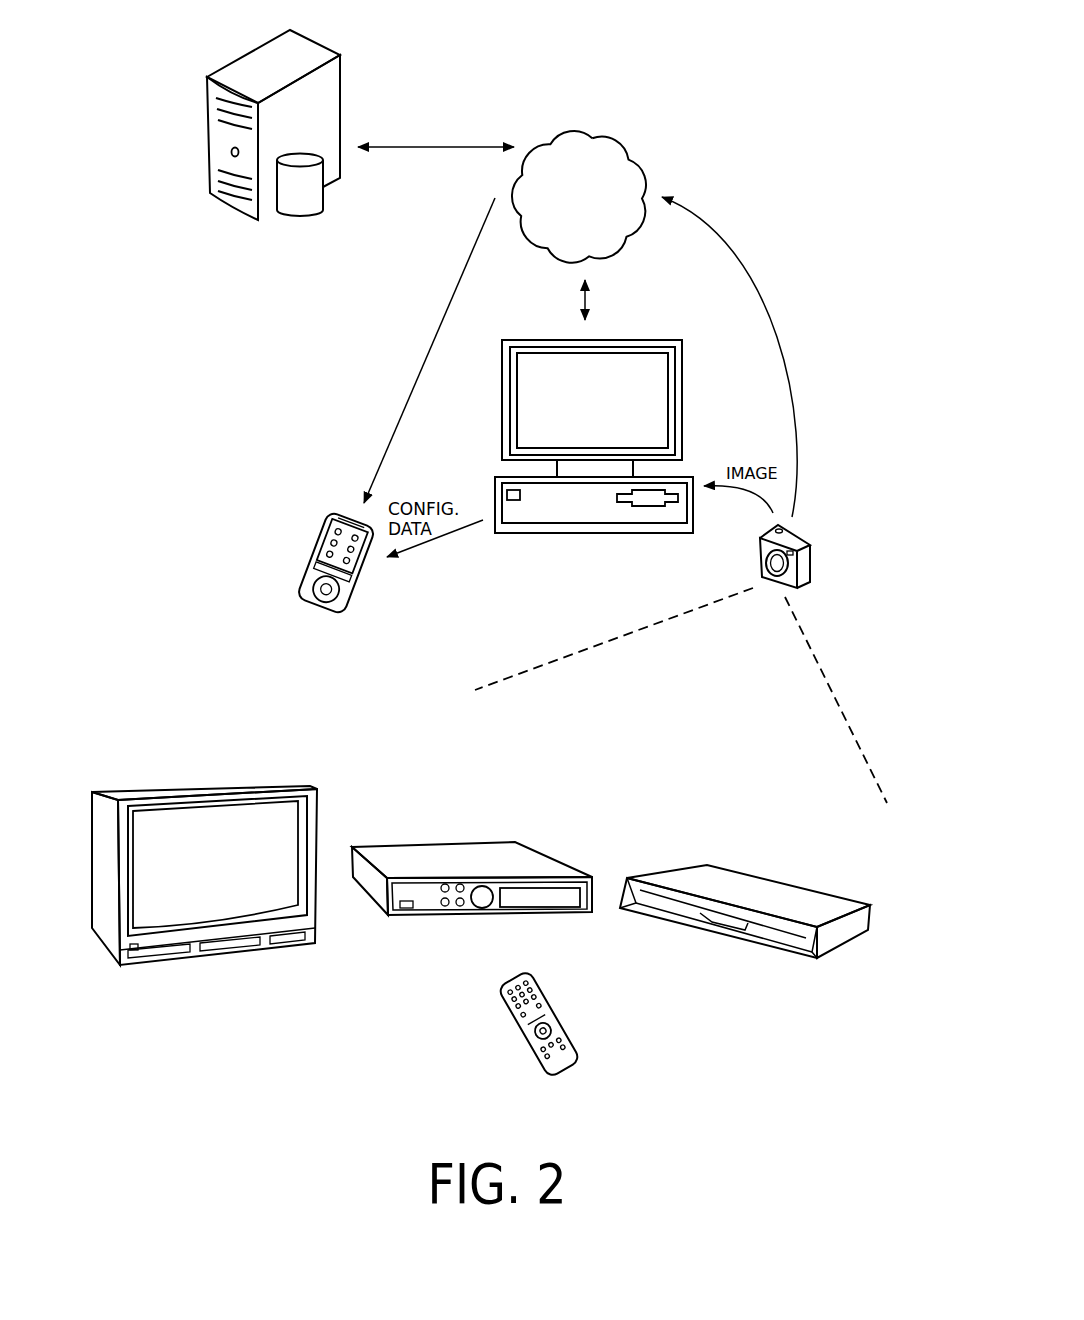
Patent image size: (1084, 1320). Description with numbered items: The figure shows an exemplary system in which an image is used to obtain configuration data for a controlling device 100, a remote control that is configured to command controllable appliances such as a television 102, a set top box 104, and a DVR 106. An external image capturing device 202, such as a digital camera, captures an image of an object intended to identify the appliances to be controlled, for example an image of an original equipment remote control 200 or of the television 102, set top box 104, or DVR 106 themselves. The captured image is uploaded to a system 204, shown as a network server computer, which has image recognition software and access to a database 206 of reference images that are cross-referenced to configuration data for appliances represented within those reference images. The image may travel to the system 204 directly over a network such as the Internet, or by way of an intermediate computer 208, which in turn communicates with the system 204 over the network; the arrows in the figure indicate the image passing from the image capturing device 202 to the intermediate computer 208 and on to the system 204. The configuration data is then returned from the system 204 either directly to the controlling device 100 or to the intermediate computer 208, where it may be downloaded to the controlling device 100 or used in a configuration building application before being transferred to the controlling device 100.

The controlling device 100 is at (313, 552).
The television 102 is at (225, 785).
The set top box 104 is at (465, 845).
The DVR 106 is at (747, 872).
The remote control 200 is at (558, 1010).
The external image capturing device 202 is at (812, 565).
The system 204 is at (208, 100).
The database 206 is at (325, 195).
The intermediate computer 208 is at (577, 533).